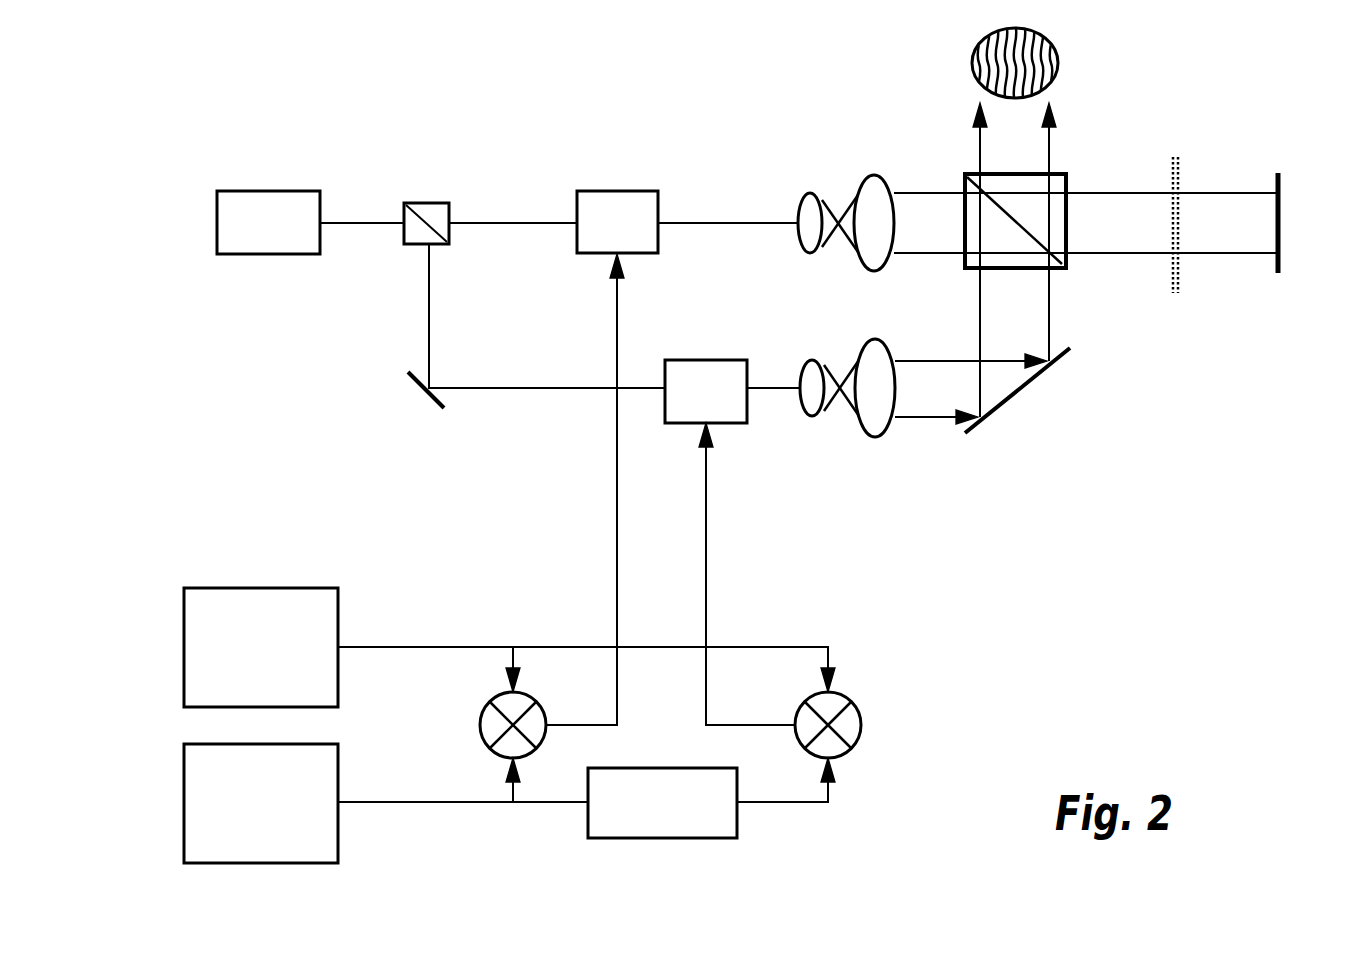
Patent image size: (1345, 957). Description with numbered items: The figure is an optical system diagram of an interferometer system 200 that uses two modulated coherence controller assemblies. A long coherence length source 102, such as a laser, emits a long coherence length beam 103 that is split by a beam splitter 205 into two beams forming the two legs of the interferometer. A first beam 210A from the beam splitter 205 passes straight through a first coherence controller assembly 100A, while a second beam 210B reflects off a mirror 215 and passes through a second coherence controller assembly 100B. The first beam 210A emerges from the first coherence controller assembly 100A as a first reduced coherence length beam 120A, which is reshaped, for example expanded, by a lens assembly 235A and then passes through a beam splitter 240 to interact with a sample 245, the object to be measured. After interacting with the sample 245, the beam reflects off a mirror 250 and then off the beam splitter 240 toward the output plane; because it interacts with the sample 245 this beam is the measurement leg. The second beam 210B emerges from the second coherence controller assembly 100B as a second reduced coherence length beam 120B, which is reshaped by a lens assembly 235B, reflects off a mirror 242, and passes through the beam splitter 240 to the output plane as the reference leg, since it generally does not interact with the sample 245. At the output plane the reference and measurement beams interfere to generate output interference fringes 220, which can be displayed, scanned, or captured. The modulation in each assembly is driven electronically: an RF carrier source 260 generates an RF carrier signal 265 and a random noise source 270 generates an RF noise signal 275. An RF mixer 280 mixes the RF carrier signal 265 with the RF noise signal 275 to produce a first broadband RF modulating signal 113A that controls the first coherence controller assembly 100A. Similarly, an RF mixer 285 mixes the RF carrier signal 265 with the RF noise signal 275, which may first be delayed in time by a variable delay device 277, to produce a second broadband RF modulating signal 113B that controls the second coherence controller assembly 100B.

The interferometer system 200 is at (341, 106).
The long coherence length source 102 is at (287, 237).
The long coherence length beam 103 is at (366, 228).
The beam splitter 205 is at (428, 201).
The first beam 210A is at (520, 222).
The second beam 210B is at (431, 301).
The mirror 215 is at (456, 428).
The first coherence controller assembly 100A is at (643, 234).
The second coherence controller assembly 100B is at (733, 404).
The first reduced coherence length beam 120A is at (732, 222).
The second reduced coherence length beam 120B is at (764, 387).
The lens assembly 235A is at (838, 178).
The lens assembly 235B is at (838, 350).
The beam splitter 240 is at (1066, 174).
The mirror 242 is at (1088, 352).
The sample 245 is at (1177, 157).
The mirror 250 is at (1280, 172).
The output interference fringes 220 is at (1078, 60).
The RF carrier source 260 is at (338, 594).
The RF carrier signal 265 is at (386, 647).
The random noise source 270 is at (338, 756).
The RF noise signal 275 is at (386, 802).
The variable delay device 277 is at (684, 838).
The RF mixer 280 is at (485, 712).
The RF mixer 285 is at (862, 725).
The first broadband RF modulating signal 113A is at (616, 567).
The second broadband RF modulating signal 113B is at (708, 565).